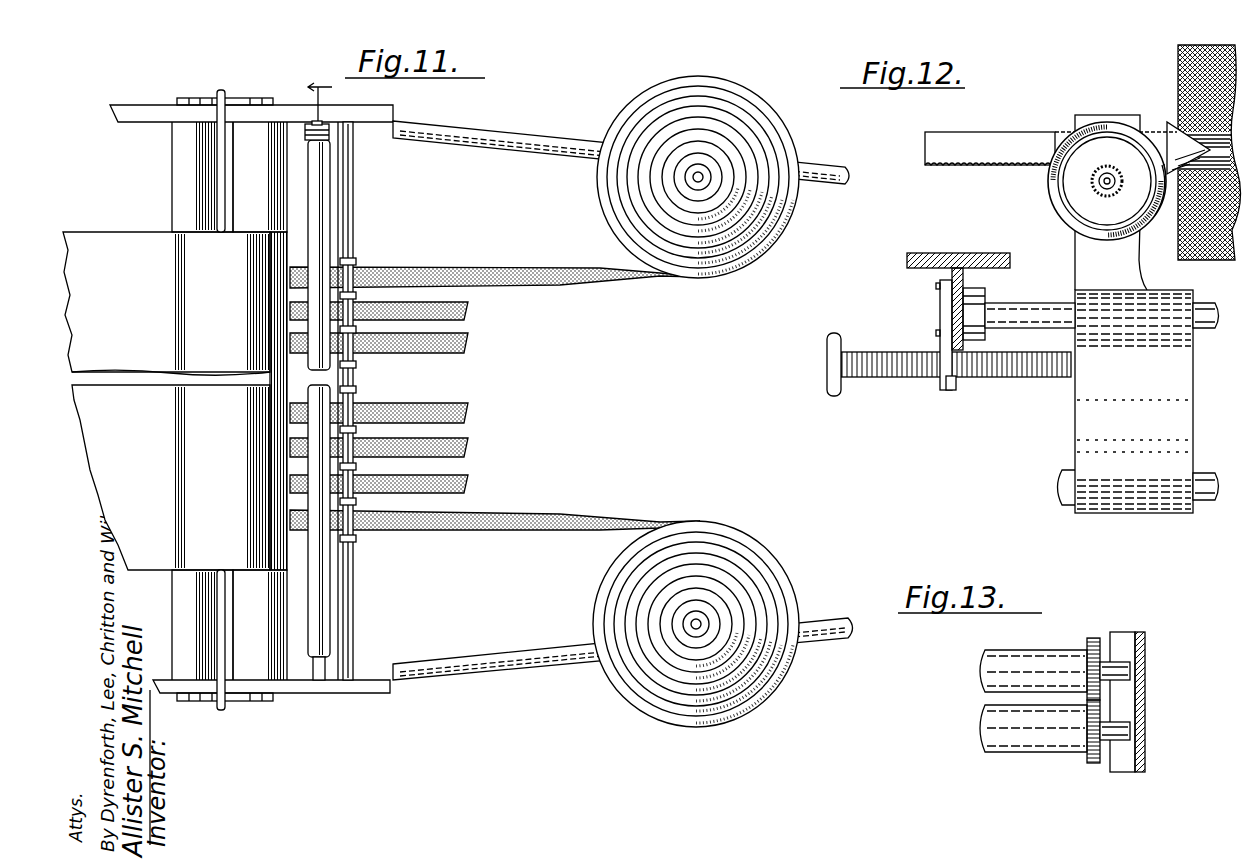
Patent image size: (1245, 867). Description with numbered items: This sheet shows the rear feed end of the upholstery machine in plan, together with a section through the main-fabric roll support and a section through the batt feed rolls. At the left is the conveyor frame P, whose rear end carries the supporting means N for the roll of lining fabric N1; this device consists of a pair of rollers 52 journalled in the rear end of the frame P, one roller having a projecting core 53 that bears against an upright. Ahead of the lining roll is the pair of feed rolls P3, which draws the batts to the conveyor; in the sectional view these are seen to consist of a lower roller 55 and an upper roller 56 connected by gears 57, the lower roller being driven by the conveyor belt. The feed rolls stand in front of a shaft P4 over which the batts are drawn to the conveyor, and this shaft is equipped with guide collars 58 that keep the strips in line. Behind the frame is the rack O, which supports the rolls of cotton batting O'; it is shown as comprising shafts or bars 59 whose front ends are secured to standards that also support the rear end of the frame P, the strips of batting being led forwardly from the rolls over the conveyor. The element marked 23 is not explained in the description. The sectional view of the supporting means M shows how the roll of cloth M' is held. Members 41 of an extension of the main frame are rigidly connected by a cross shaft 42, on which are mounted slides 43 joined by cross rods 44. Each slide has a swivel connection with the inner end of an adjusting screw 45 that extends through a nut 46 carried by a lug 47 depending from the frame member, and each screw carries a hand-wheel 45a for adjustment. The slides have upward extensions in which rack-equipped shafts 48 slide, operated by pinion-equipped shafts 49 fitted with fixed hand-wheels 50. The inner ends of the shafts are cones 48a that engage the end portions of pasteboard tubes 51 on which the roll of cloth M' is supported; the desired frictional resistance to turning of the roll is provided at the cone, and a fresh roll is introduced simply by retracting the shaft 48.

In FIG. 11, the conveyor frame P is at (137, 105).
In FIG. 11, the projecting core 53 is at (223, 92).
In FIG. 11, the rollers 52 is at (246, 680).
In FIG. 11, the shaft 23 is at (330, 93).
In FIG. 11, the gears 57 is at (305, 134).
In FIG. 13, the gears 57 is at (1100, 715).
In FIG. 11, the supporting means for lining fabric roll N is at (245, 160).
In FIG. 11, the roll of lining fabric N1 is at (166, 401).
In FIG. 11, the pair of feed rolls P3 is at (320, 191).
In FIG. 13, the pair of feed rolls P3 is at (945, 705).
In FIG. 11, the shaft P4 is at (350, 232).
In FIG. 11, the guide collars 58 is at (358, 294).
In FIG. 11, the shafts or bars 59 is at (515, 143).
In FIG. 11, the rolls of cotton batting O' is at (544, 306).
In FIG. 11, the rack for rolls of batts O is at (663, 624).
In FIG. 12, the roll of cloth M' is at (1168, 149).
In FIG. 12, the cones 48a is at (1166, 128).
In FIG. 12, the rack-equipped shafts 48 is at (1012, 146).
In FIG. 12, the pinion-equipped shafts 49 is at (1094, 184).
In FIG. 12, the supporting means for main fabric M is at (1058, 181).
In FIG. 12, the hand-wheels 45a is at (828, 378).
In FIG. 12, the pasteboard tubes 51 is at (1160, 188).
In FIG. 12, the hand-wheels 50 is at (1119, 228).
In FIG. 12, the frame members 41 is at (918, 270).
In FIG. 12, the cross shaft 42 is at (1020, 313).
In FIG. 12, the nuts 46 is at (938, 383).
In FIG. 12, the lugs 47 is at (950, 391).
In FIG. 12, the adjusting screws 45 is at (1030, 380).
In FIG. 12, the slides 43 is at (1185, 428).
In FIG. 12, the cross rods 44 is at (1210, 488).
In FIG. 13, the upper roller 56 is at (1017, 661).
In FIG. 13, the lower roller 55 is at (1020, 737).